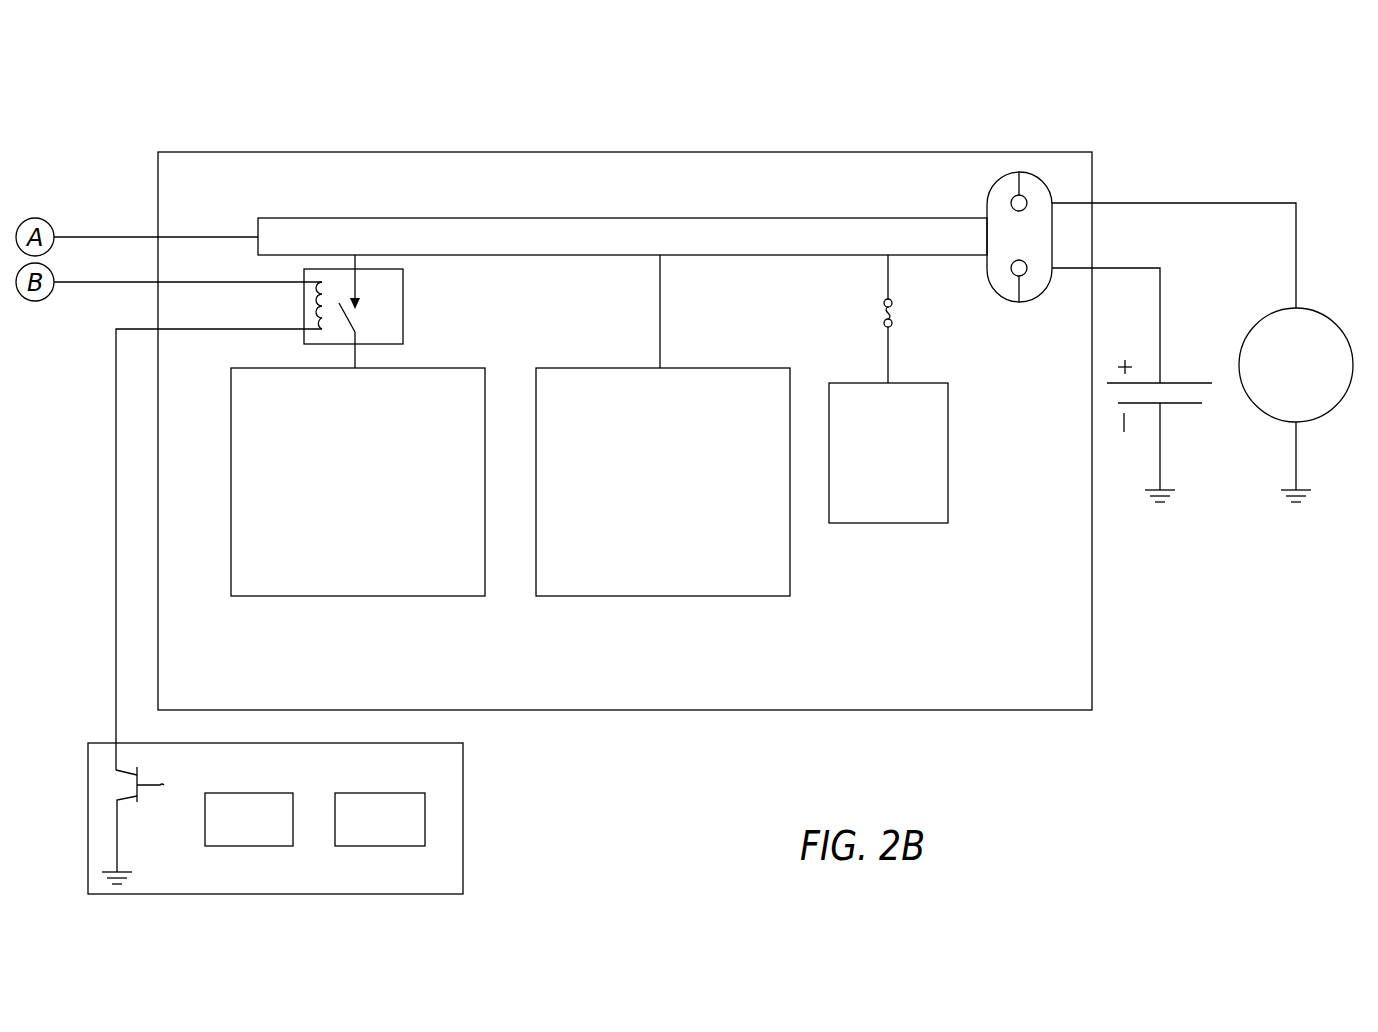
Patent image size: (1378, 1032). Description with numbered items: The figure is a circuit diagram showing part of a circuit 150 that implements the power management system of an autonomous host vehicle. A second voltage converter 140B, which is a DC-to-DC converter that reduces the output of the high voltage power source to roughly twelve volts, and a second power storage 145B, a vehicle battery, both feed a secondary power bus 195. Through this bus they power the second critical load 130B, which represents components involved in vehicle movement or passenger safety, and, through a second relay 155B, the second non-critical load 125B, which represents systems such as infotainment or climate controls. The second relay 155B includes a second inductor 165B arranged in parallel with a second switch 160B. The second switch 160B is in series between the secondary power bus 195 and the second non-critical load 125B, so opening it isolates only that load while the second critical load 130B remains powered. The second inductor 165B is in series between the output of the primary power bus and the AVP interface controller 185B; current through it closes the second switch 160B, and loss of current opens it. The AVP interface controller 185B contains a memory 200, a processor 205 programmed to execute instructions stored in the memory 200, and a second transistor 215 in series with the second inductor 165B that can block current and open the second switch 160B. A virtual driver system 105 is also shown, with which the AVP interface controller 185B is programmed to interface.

The circuit 150 is at (1220, 60).
The secondary power bus 195 is at (523, 218).
The second relay 155B is at (404, 293).
The second inductor 165B is at (318, 276).
The second switch 160B is at (378, 326).
The second non-critical load 125B is at (462, 596).
The second critical load 130B is at (748, 596).
The virtual driver system 105 is at (888, 389).
The second voltage converter 140B is at (1277, 308).
The second power storage 145B is at (1191, 425).
The AVP interface controller 185B is at (463, 770).
The second transistor 215 is at (113, 786).
The memory 200 is at (249, 819).
The processor 205 is at (380, 819).